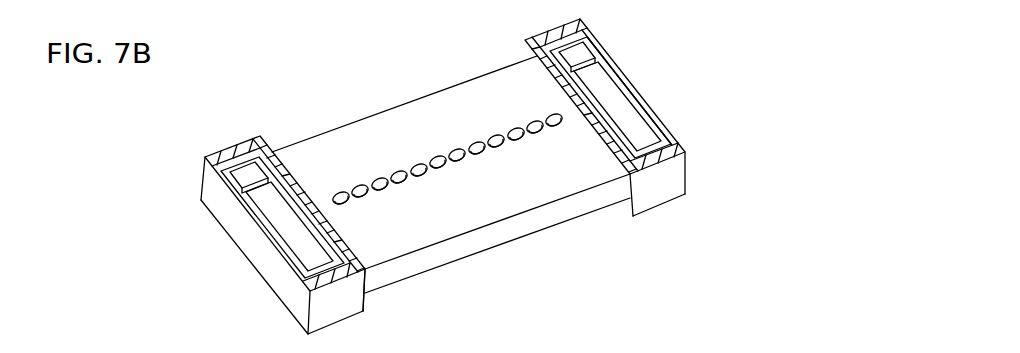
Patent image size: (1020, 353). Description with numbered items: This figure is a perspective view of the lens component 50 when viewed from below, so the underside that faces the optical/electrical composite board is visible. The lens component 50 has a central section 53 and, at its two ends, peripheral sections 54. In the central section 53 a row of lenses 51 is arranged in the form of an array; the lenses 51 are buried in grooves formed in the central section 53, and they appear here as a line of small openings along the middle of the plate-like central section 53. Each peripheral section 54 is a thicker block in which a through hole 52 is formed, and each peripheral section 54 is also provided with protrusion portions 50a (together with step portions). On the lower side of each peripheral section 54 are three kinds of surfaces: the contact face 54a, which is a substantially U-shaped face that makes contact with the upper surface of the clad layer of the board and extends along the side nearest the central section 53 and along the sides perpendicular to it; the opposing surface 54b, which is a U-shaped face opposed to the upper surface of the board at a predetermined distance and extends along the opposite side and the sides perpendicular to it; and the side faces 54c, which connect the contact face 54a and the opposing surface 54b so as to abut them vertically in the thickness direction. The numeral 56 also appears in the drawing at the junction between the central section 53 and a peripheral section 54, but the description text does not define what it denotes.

The lens component 50 is at (481, 176).
The protrusion portion 50a is at (257, 193).
The lens 51 is at (505, 143).
The through hole 52 is at (290, 220).
The central section 53 is at (568, 200).
The peripheral section 54 is at (342, 310).
The contact face 54a is at (668, 150).
The opposing surface 54b is at (643, 107).
The side face 54c is at (244, 150).
The joint portion 56 is at (367, 268).